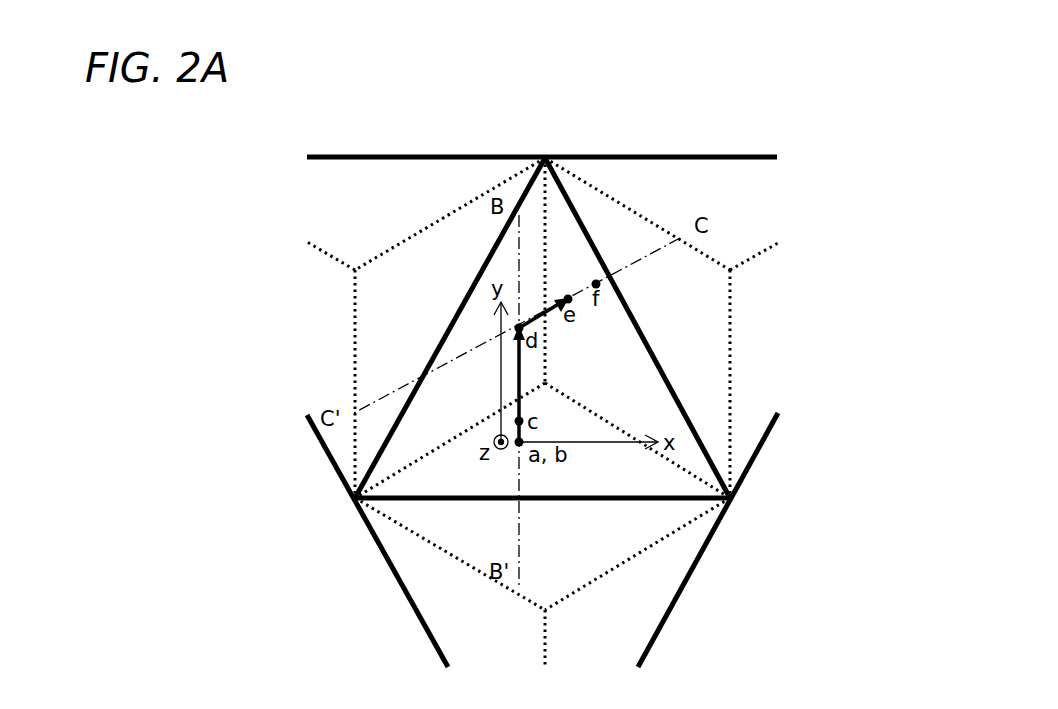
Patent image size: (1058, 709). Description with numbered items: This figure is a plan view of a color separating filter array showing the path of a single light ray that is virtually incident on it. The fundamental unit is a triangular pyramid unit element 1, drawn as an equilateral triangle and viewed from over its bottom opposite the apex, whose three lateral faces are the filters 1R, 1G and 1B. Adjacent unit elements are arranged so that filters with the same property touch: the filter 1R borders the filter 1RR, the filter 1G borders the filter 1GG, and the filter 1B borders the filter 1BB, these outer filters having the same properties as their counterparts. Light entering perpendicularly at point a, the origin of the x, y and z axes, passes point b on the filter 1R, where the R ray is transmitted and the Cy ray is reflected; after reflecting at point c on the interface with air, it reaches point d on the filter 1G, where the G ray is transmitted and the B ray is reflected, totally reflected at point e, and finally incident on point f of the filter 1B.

The unit element 1 is at (518, 318).
The filter 1G is at (467, 335).
The filter 1GG is at (375, 340).
The filter 1B is at (618, 353).
The filter 1BB is at (715, 358).
The filter 1R is at (407, 485).
The filter 1RR is at (427, 525).